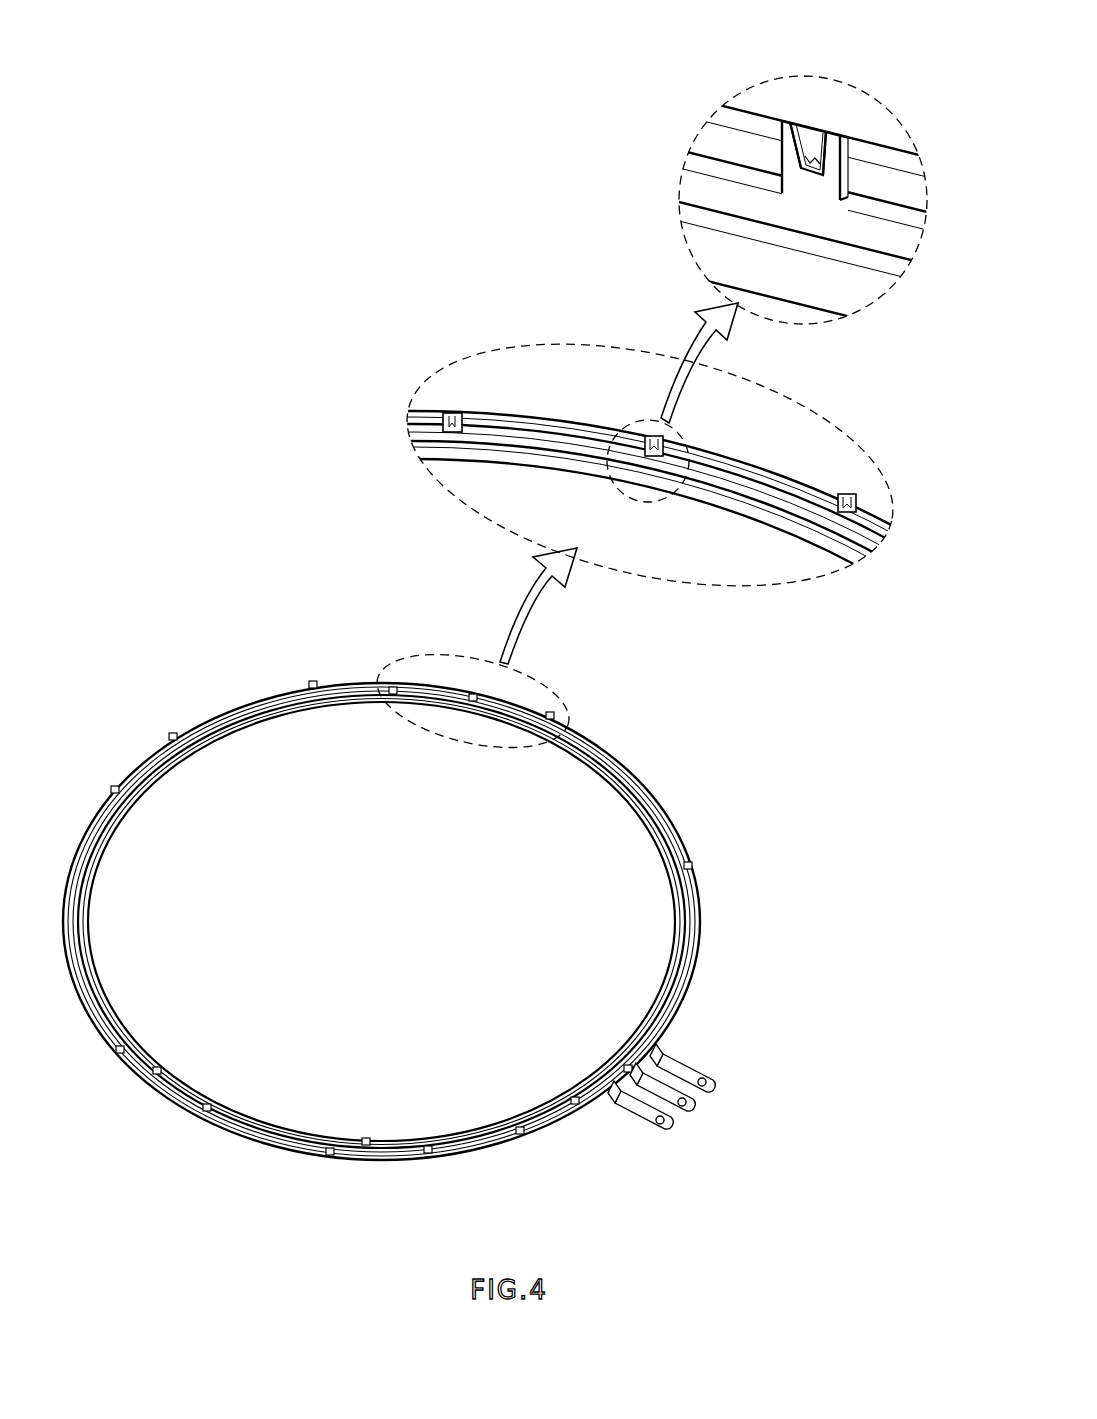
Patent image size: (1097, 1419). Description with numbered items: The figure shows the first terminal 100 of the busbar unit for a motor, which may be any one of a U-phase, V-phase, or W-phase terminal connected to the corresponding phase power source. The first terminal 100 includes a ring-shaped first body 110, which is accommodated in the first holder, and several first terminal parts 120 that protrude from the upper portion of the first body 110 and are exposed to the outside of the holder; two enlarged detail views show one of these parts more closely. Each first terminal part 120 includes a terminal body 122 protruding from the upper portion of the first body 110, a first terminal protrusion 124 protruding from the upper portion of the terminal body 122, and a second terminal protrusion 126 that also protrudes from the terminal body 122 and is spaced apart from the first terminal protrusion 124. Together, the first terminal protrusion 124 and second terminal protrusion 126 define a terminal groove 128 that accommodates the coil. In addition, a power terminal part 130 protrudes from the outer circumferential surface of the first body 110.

The first terminal 100 is at (583, 298).
The first body 110 is at (858, 200).
The first terminal part 120 is at (856, 151).
The terminal body 122 is at (797, 187).
The first terminal protrusion 124 is at (789, 119).
The second terminal protrusion 126 is at (848, 136).
The terminal groove 128 is at (812, 150).
The power terminal part 130 is at (648, 1117).